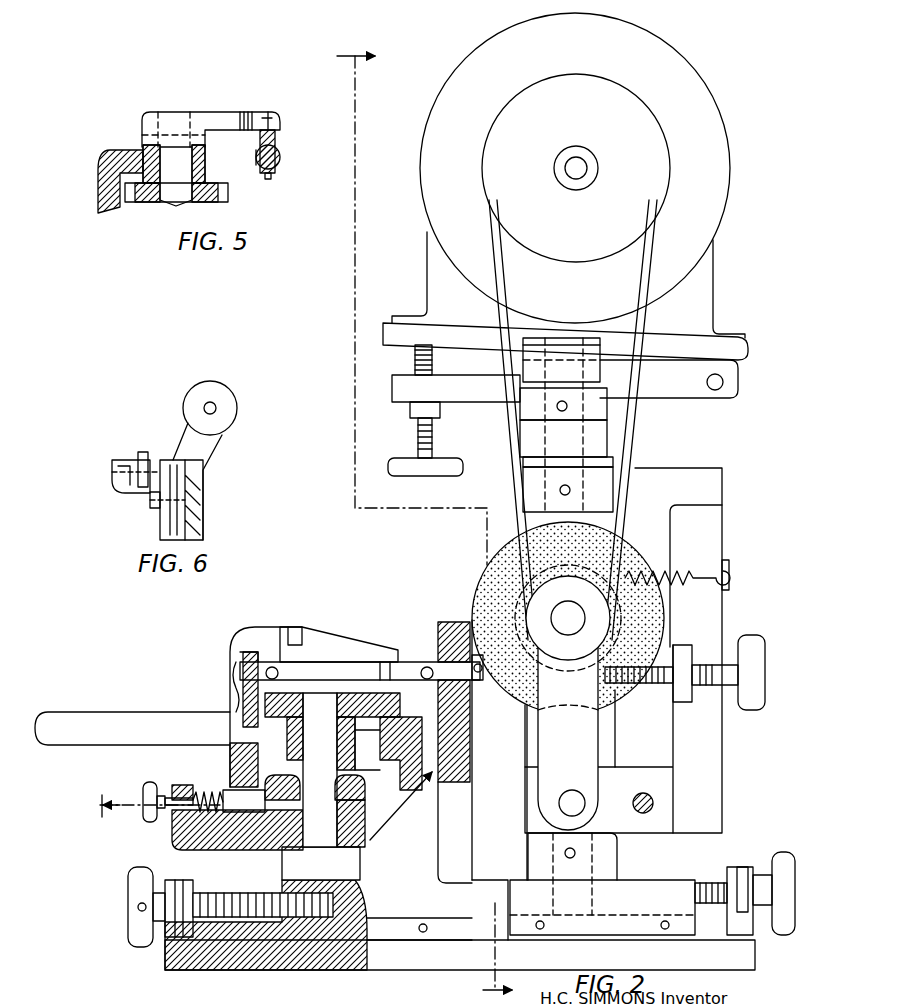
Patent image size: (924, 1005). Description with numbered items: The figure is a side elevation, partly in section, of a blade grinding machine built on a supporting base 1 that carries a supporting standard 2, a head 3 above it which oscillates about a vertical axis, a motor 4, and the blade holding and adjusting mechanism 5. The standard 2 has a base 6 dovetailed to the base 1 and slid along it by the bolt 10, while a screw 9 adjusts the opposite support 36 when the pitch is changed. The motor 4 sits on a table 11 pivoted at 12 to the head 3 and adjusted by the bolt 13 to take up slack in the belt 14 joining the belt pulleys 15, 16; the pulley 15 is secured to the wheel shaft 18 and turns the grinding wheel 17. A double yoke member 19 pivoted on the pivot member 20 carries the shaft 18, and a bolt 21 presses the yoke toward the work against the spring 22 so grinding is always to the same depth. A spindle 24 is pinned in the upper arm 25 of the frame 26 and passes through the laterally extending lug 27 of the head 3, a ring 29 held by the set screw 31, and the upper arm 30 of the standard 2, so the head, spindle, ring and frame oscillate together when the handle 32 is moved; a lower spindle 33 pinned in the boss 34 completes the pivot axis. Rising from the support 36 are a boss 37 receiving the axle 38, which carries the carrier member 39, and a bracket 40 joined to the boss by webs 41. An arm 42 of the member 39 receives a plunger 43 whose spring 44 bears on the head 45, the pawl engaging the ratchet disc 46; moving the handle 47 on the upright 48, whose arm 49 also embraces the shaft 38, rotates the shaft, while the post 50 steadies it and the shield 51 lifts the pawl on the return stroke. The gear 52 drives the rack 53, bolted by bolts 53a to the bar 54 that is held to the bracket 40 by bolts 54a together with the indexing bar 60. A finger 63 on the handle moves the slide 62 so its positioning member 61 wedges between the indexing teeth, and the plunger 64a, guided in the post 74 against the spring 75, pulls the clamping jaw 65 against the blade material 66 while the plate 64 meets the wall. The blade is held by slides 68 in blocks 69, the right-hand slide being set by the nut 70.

In FIG. 2, the supporting base 1 is at (752, 952).
In FIG. 2, the supporting standard 2 is at (610, 732).
In FIG. 2, the head 3 is at (660, 392).
In FIG. 2, the motor 4 is at (730, 165).
In FIG. 2, the blade holding and adjusting mechanism 5 is at (400, 662).
In FIG. 2, the base of standard 6 is at (518, 878).
In FIG. 2, the screw 9 is at (143, 940).
In FIG. 2, the bolt 10 is at (780, 855).
In FIG. 2, the table 11 is at (745, 352).
In FIG. 2, the pivot 12 is at (720, 390).
In FIG. 2, the bolt 13 is at (438, 428).
In FIG. 2, the belt 14 is at (630, 440).
In FIG. 2, the belt pulley 15 is at (565, 582).
In FIG. 2, the belt pulley 16 is at (576, 168).
In FIG. 2, the grinding wheel 17 is at (492, 565).
In FIG. 2, the wheel shaft 18 is at (575, 620).
In FIG. 2, the double yoke member 19 is at (590, 748).
In FIG. 2, the pivot member 20 is at (580, 800).
In FIG. 2, the bolt 21 is at (758, 668).
In FIG. 2, the spring 22 is at (682, 572).
In FIG. 2, the spindle 24 is at (590, 378).
In FIG. 2, the upper arm of frame 25 is at (652, 472).
In FIG. 2, the frame 26 is at (728, 620).
In FIG. 2, the laterally extending lug 27 is at (567, 343).
In FIG. 2, the ring 29 is at (600, 398).
In FIG. 2, the upper arm of standard 30 is at (530, 438).
In FIG. 2, the set screw 31 is at (557, 407).
In FIG. 2, the handle 32 is at (655, 800).
In FIG. 2, the spindle 33 is at (612, 893).
In FIG. 2, the boss 34 is at (612, 857).
In FIG. 2, the support 36 is at (478, 895).
In FIG. 2, the boss 37 is at (282, 857).
In FIG. 5, the axle 38 is at (167, 196).
In FIG. 2, the axle 38 is at (325, 750).
In FIG. 2, the carrier member 39 is at (357, 842).
In FIG. 2, the bracket 40 is at (475, 800).
In FIG. 2, the webs 41 is at (415, 812).
In FIG. 2, the arm 42 is at (182, 830).
In FIG. 2, the plunger 43 is at (165, 797).
In FIG. 2, the spring 44 is at (204, 792).
In FIG. 2, the head 45 is at (244, 801).
In FIG. 2, the disc 46 is at (323, 802).
In FIG. 2, the handle 47 is at (112, 714).
In FIG. 2, the upright 48 is at (243, 700).
In FIG. 2, the arm 49 is at (272, 640).
In FIG. 5, the post 50 is at (98, 200).
In FIG. 2, the post 50 is at (388, 760).
In FIG. 2, the shield 51 is at (368, 797).
In FIG. 5, the gear 52 is at (228, 195).
In FIG. 2, the gear 52 is at (290, 735).
In FIG. 6, the rack 53 is at (117, 488).
In FIG. 2, the rack 53 is at (367, 734).
In FIG. 6, the bolts 53a is at (112, 462).
In FIG. 6, the bar 54 is at (165, 462).
In FIG. 2, the bar 54 is at (470, 700).
In FIG. 6, the bolts 54a is at (150, 500).
In FIG. 6, the indexing bar 60 is at (143, 455).
In FIG. 2, the indexing bar 60 is at (470, 722).
In FIG. 2, the positioning member 61 is at (428, 667).
In FIG. 2, the slide 62 is at (362, 648).
In FIG. 5, the finger 63 is at (282, 119).
In FIG. 2, the finger 63 is at (296, 630).
In FIG. 5, the plate 64 is at (282, 157).
In FIG. 2, the plate 64 is at (378, 655).
In FIG. 5, the plunger 64a is at (257, 158).
In FIG. 2, the plunger 64a is at (476, 660).
In FIG. 2, the clamping jaw 65 is at (558, 618).
In FIG. 2, the blade material 66 is at (468, 650).
In FIG. 6, the adjustable slides 68 is at (217, 408).
In FIG. 6, the blocks 69 is at (202, 453).
In FIG. 6, the nut 70 is at (222, 392).
In FIG. 2, the post 74 is at (243, 652).
In FIG. 2, the spring 75 is at (233, 672).